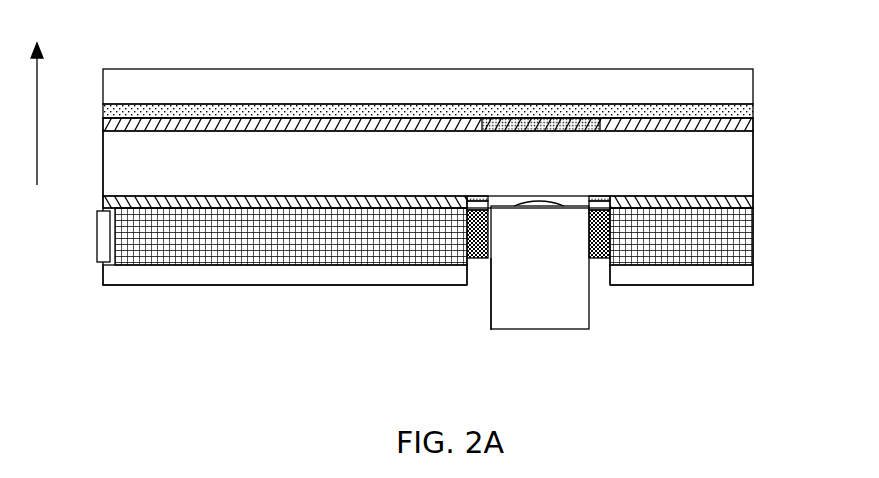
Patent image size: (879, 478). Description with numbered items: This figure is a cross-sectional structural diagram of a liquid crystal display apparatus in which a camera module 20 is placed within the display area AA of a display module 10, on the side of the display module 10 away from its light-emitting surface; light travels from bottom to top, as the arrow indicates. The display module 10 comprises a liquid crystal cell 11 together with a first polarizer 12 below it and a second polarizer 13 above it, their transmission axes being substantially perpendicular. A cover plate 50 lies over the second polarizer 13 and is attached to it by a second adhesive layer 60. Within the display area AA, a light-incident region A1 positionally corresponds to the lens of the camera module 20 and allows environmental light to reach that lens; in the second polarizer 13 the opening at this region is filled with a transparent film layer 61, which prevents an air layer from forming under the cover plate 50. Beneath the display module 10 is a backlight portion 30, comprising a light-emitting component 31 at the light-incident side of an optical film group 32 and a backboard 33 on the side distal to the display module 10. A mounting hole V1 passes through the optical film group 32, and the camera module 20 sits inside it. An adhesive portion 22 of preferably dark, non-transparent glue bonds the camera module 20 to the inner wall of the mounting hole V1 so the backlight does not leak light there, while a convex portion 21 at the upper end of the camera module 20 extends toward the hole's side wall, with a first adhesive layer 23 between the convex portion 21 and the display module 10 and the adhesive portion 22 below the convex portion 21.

The display module 10 is at (802, 123).
The liquid crystal cell 11 is at (755, 170).
The first polarizer 12 is at (755, 206).
The second polarizer 13 is at (755, 128).
The camera module 20 is at (545, 313).
The convex portion 21 is at (602, 258).
The adhesive portion 22 is at (597, 258).
The first adhesive layer 23 is at (483, 258).
The backlight portion 30 is at (38, 220).
The light-emitting component 31 is at (97, 221).
The optical film group 32 is at (123, 237).
The backboard 33 is at (115, 281).
The cover plate 50 is at (755, 83).
The second adhesive layer 60 is at (755, 117).
The transparent film layer 61 is at (586, 120).
The mounting hole V1 is at (477, 273).
The light-incident region A1 is at (603, 63).
The display area AA is at (753, 15).